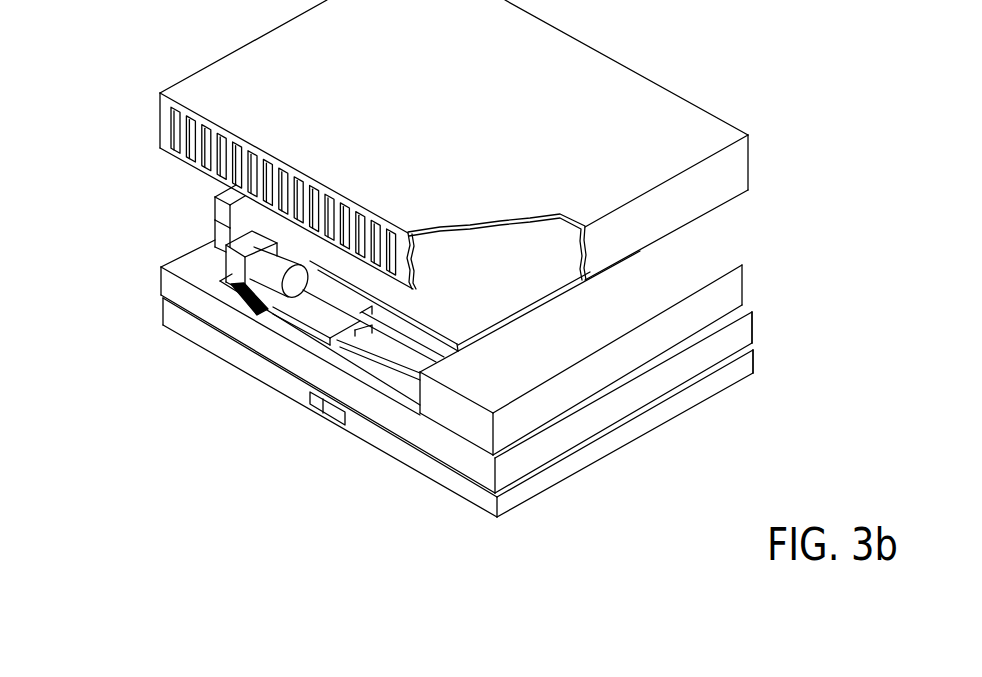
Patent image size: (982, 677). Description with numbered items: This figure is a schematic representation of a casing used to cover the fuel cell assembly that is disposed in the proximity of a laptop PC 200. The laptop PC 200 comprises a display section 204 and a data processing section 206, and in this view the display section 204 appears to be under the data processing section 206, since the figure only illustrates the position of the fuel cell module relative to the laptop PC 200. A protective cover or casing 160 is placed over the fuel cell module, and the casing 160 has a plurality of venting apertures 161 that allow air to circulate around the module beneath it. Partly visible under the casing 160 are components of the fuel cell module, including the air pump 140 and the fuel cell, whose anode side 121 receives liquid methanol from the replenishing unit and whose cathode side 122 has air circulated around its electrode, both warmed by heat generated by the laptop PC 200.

The protective cover or casing 160 is at (692, 205).
The venting apertures 161 is at (188, 133).
The cathode side 122 is at (222, 213).
The anode side 121 is at (222, 235).
The air pump 140 is at (233, 262).
The display section 204 is at (258, 372).
The data processing section 206 is at (443, 445).
The laptop or notebook PC 200 is at (762, 402).